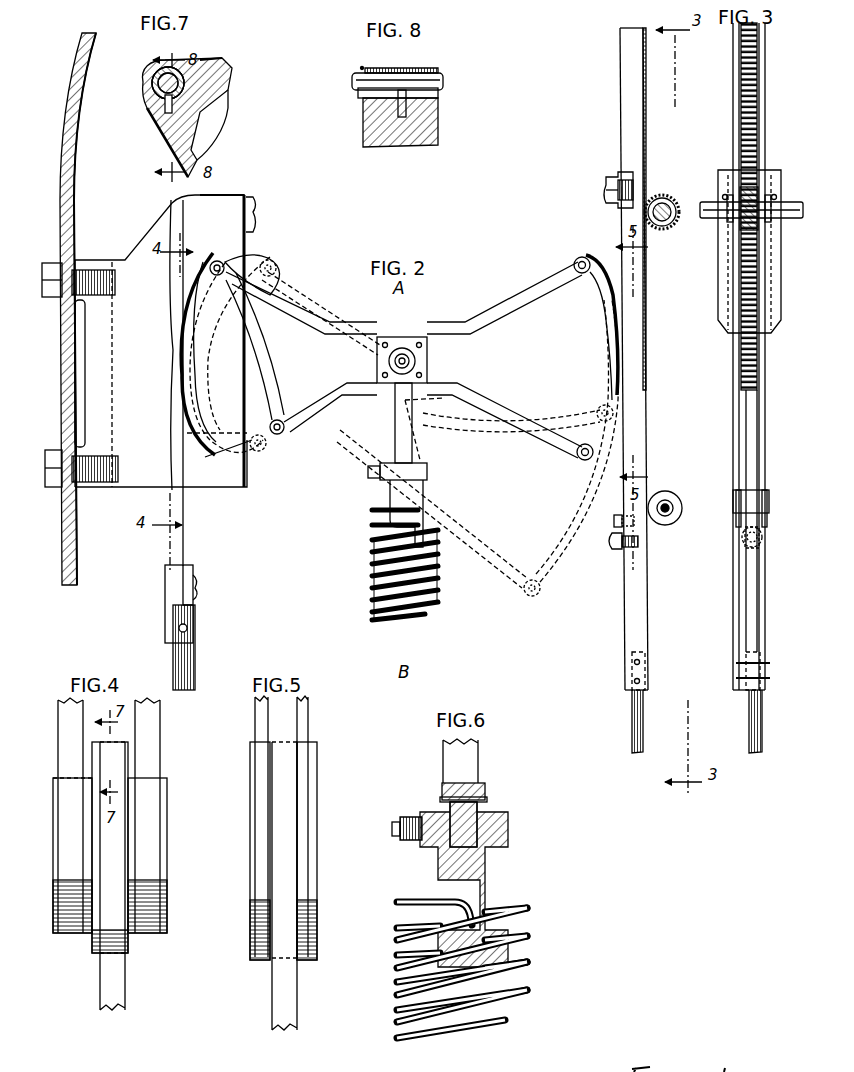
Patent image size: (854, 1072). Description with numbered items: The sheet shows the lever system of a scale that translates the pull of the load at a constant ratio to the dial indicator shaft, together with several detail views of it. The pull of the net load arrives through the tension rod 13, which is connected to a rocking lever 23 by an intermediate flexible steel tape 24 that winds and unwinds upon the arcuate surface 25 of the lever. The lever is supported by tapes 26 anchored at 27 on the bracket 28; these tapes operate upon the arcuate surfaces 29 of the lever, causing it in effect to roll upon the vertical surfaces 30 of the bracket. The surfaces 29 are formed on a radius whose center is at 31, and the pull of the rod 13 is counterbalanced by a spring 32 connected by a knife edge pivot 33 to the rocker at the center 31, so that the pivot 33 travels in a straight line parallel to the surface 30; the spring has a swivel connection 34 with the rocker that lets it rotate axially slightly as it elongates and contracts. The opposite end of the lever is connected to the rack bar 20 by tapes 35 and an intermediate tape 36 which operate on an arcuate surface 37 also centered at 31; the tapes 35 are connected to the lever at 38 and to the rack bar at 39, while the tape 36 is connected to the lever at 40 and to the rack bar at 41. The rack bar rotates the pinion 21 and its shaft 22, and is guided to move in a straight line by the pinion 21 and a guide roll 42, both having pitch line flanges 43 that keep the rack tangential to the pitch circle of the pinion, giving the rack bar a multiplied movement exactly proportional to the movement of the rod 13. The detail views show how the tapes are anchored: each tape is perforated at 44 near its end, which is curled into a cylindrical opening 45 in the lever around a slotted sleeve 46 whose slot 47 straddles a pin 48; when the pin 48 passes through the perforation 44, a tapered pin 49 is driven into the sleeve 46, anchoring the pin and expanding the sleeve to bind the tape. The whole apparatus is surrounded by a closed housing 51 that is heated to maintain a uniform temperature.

In FIG. 2, the tension rod 13 is at (196, 656).
In FIG. 3, the rack bar 20 is at (748, 426).
In FIG. 2, the rack bar 20 is at (637, 406).
In FIG. 3, the pinion 21 is at (758, 195).
In FIG. 2, the pinion 21 is at (670, 226).
In FIG. 3, the shaft 22 is at (795, 218).
In FIG. 2, the shaft 22 is at (660, 195).
In FIG. 8, the rocking lever 23 is at (425, 120).
In FIG. 2, the rocking lever 23 is at (528, 305).
In FIG. 2, the flexible steel tape 24 is at (185, 508).
In FIG. 4, the flexible steel tape 24 is at (105, 985).
In FIG. 2, the arcuate surface 25 is at (193, 427).
In FIG. 4, the arcuate surface 25 is at (130, 946).
In FIG. 2, the tapes 26 is at (246, 250).
In FIG. 4, the tapes 26 is at (68, 733).
In FIG. 2, the anchor 27 is at (255, 205).
In FIG. 2, the bracket 28 is at (226, 204).
In FIG. 2, the arcuate surfaces 29 is at (252, 338).
In FIG. 4, the arcuate surfaces 29 is at (55, 843).
In FIG. 2, the vertical surfaces 30 is at (232, 471).
In FIG. 2, the center 31 is at (410, 356).
In FIG. 2, the spring 32 is at (430, 605).
In FIG. 6, the spring 32 is at (505, 930).
In FIG. 2, the knife edge pivot 33 is at (400, 355).
In FIG. 6, the swivel connection 34 is at (492, 912).
In FIG. 2, the tapes 35 is at (622, 228).
In FIG. 5, the tapes 35 is at (258, 717).
In FIG. 2, the intermediate tape 36 is at (622, 503).
In FIG. 5, the intermediate tape 36 is at (290, 990).
In FIG. 2, the arcuate surface 37 is at (607, 302).
In FIG. 5, the arcuate surface 37 is at (318, 907).
In FIG. 2, the connection of tapes 35 to lever 38 is at (583, 460).
In FIG. 2, the connection of tapes 35 to rack bar 39 is at (606, 190).
In FIG. 2, the connection of tape 36 to lever 40 is at (576, 262).
In FIG. 2, the connection of tape 36 to rack bar 41 is at (618, 550).
In FIG. 2, the guide roll 42 is at (690, 487).
In FIG. 3, the pitch line flanges 43 is at (776, 205).
In FIG. 2, the pitch line flanges 43 is at (678, 204).
In FIG. 8, the perforation 44 is at (406, 95).
In FIG. 7, the cylindrical opening 45 is at (145, 100).
In FIG. 7, the slotted sleeve 46 is at (188, 86).
In FIG. 8, the slot 47 is at (438, 93).
In FIG. 7, the pin 48 is at (176, 112).
In FIG. 8, the pin 48 is at (398, 110).
In FIG. 8, the tapered pin 49 is at (354, 76).
In FIG. 2, the closed housing 51 is at (64, 532).